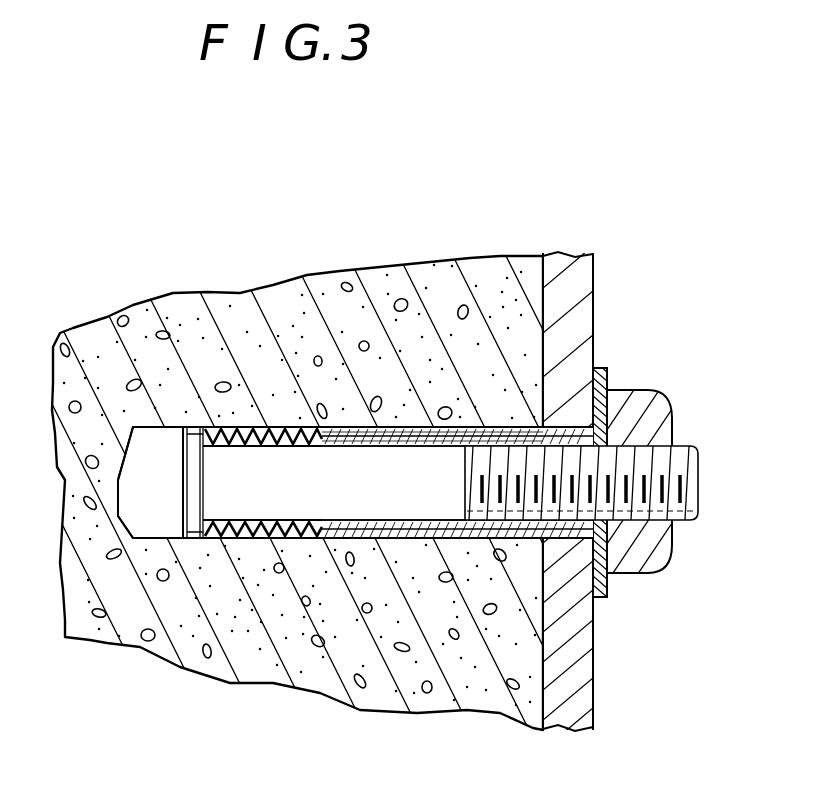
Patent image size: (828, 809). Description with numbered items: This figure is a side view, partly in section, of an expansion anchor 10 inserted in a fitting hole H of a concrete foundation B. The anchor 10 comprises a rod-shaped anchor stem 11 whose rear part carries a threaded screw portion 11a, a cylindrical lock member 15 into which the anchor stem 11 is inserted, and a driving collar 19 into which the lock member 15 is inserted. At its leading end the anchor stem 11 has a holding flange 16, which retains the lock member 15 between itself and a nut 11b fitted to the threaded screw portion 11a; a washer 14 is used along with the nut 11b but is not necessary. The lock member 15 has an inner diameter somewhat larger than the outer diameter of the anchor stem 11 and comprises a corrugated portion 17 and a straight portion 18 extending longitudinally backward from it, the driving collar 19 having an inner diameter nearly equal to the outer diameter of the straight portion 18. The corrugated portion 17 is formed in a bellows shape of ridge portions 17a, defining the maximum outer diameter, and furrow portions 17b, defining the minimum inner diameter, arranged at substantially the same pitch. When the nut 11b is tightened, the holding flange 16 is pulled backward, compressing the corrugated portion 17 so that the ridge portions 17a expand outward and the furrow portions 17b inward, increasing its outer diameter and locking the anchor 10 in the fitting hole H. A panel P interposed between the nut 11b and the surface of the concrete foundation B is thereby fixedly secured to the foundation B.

The expansion anchor 10 is at (381, 470).
The anchor stem 11 is at (458, 550).
The threaded screw portion 11a is at (672, 450).
The nut 11b is at (632, 400).
The washer 14 is at (598, 367).
The cylindrical lock member 15 is at (247, 547).
The holding flange 16 is at (190, 480).
The corrugated portion 17 is at (398, 343).
The ridge portions 17a is at (272, 425).
The furrow portions 17b is at (305, 425).
The straight portion 18 is at (417, 425).
The driving collar 19 is at (477, 425).
The concrete foundation B is at (363, 303).
The fitting hole H is at (153, 523).
The panel P is at (580, 677).